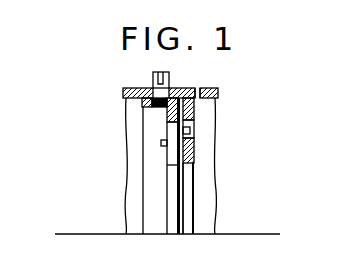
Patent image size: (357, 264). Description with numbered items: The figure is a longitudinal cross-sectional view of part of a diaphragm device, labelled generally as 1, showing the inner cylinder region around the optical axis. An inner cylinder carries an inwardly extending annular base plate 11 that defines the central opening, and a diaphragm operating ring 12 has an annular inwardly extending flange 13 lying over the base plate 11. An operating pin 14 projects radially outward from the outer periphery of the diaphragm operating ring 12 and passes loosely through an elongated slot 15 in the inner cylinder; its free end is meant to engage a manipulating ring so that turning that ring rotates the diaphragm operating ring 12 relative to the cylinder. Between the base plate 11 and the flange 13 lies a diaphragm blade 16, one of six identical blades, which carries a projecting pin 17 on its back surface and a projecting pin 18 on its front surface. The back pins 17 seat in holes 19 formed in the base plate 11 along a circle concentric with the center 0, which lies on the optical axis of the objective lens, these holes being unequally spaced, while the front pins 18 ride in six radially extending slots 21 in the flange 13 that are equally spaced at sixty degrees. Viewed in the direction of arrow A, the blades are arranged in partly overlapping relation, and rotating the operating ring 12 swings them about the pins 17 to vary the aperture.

The support plate 1 is at (218, 90).
The operating pin 14 is at (169, 81).
The elongated slot 15 is at (148, 88).
The diaphragm operating ring 12 is at (150, 107).
The annular inwardly extending flange 13 is at (168, 118).
The radially extending slots 21 is at (172, 164).
The projecting pins 18 is at (163, 143).
The holes 19 is at (196, 120).
The projecting pins 17 is at (196, 131).
The annular base plate 11 is at (194, 158).
The diaphragm blades 16 is at (188, 178).
The center 0 is at (227, 234).
The arrow A is at (74, 185).